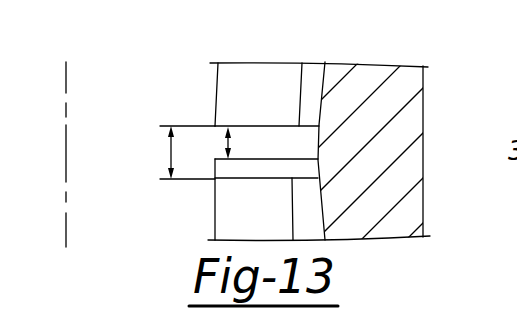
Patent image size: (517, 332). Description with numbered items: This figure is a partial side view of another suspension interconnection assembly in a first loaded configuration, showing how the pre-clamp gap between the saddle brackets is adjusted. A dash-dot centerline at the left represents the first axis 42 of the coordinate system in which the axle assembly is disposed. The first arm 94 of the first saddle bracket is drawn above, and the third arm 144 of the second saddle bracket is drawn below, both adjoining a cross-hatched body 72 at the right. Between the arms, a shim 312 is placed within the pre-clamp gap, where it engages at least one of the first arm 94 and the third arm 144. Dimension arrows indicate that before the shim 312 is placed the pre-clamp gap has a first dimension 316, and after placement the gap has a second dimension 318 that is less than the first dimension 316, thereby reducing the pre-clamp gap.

The first axis 42 is at (63, 76).
The first arm 94 is at (228, 80).
The housing body 72 is at (385, 146).
The first dimension 316 is at (168, 147).
The second dimension 318 is at (231, 143).
The shim 312 is at (238, 170).
The third arm 144 is at (227, 226).